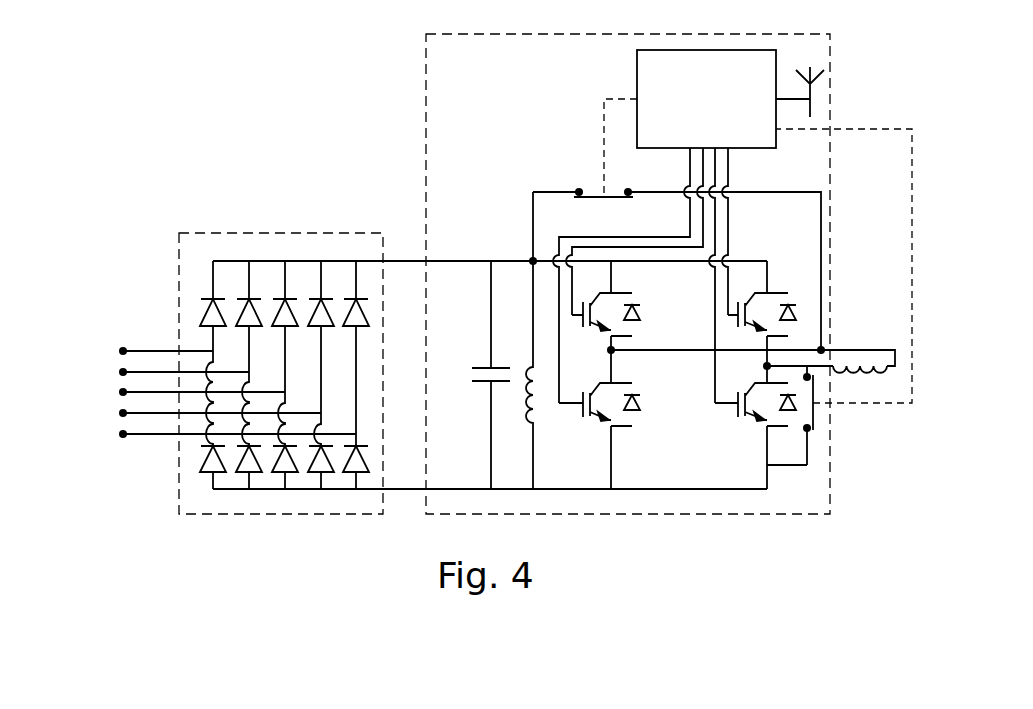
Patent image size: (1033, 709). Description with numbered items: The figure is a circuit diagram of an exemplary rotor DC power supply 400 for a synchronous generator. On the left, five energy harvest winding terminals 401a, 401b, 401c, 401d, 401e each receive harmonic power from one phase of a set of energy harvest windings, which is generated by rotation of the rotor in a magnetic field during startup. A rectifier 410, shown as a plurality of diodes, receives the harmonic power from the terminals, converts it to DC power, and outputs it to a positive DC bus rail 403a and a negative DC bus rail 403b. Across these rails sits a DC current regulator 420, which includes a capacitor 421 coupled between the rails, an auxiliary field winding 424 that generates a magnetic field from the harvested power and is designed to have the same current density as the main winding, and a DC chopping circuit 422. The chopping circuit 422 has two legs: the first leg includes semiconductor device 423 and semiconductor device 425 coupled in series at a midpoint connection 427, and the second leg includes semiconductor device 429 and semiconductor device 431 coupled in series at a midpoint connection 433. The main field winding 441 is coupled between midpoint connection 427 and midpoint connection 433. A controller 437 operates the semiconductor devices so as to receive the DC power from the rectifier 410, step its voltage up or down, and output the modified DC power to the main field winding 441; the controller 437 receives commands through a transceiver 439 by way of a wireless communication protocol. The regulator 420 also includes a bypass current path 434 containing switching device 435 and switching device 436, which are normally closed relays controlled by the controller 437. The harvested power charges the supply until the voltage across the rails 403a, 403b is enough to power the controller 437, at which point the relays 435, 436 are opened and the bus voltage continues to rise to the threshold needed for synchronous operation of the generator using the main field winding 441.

The DC power supply 400 is at (857, 51).
The energy harvest winding terminal 401a is at (119, 351).
The energy harvest winding terminal 401b is at (119, 372).
The energy harvest winding terminal 401c is at (119, 392).
The energy harvest winding terminal 401d is at (119, 413).
The energy harvest winding terminal 401e is at (119, 434).
The positive DC bus rail 403a is at (405, 260).
The negative DC bus rail 403b is at (410, 490).
The rectifier 410 is at (215, 232).
The DC current regulator 420 is at (425, 92).
The capacitor 421 is at (490, 294).
The DC chopping circuit 422 is at (677, 497).
The semiconductor device 423 is at (641, 294).
The auxiliary field winding 424 is at (533, 421).
The semiconductor device 425 is at (641, 424).
The midpoint connection 427 is at (613, 351).
The semiconductor device 429 is at (780, 292).
The semiconductor device 431 is at (772, 430).
The midpoint connection 433 is at (764, 367).
The bypass current path 434 is at (532, 192).
The switching device 435 is at (590, 196).
The switching device 436 is at (810, 440).
The controller 437 is at (636, 62).
The transceiver 439 is at (812, 98).
The main field winding 441 is at (878, 372).